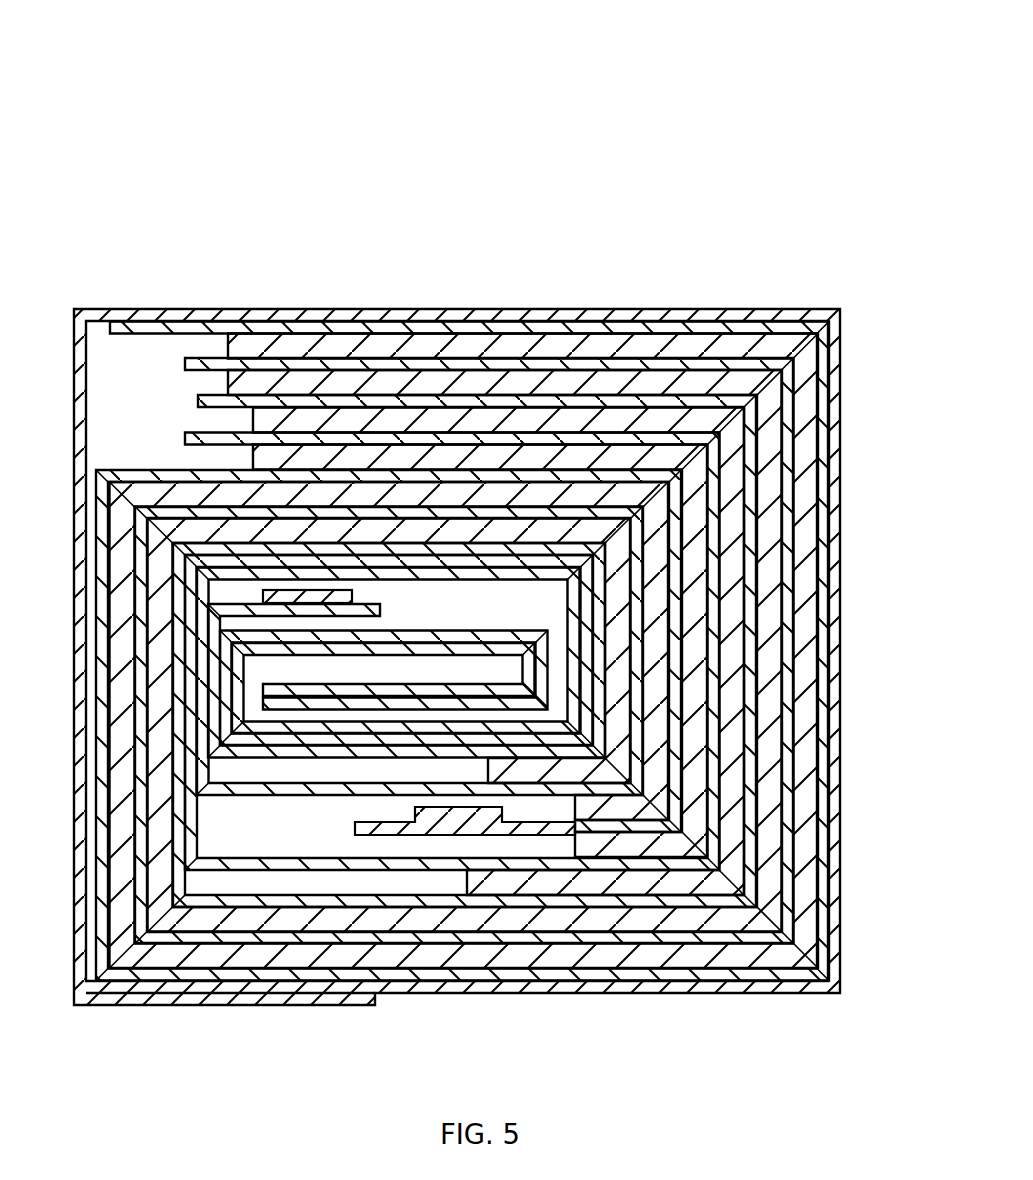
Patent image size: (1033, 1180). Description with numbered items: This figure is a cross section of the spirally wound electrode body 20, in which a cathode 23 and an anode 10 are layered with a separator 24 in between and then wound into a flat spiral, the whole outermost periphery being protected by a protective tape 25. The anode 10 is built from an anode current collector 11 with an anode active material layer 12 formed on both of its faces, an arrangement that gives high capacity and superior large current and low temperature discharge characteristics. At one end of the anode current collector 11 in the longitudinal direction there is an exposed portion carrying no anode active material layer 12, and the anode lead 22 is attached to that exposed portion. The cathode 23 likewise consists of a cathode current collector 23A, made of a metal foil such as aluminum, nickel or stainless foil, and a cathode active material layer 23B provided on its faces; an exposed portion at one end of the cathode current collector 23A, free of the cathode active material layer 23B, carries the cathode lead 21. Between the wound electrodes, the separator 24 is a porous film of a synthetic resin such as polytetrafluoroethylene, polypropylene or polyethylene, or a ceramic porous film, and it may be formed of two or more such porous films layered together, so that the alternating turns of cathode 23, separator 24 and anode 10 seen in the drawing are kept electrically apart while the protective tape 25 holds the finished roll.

The anode 10 is at (462, 563).
The anode current collector 11 is at (462, 584).
The anode active material layer 12 is at (464, 578).
The spirally wound electrode body 20 is at (457, 537).
The cathode lead 21 is at (307, 829).
The anode lead 22 is at (465, 938).
The cathode 23 is at (465, 539).
The cathode current collector 23A is at (464, 547).
The cathode active material layer 23B is at (465, 560).
The separator 24 is at (464, 567).
The protective tape 25 is at (457, 598).